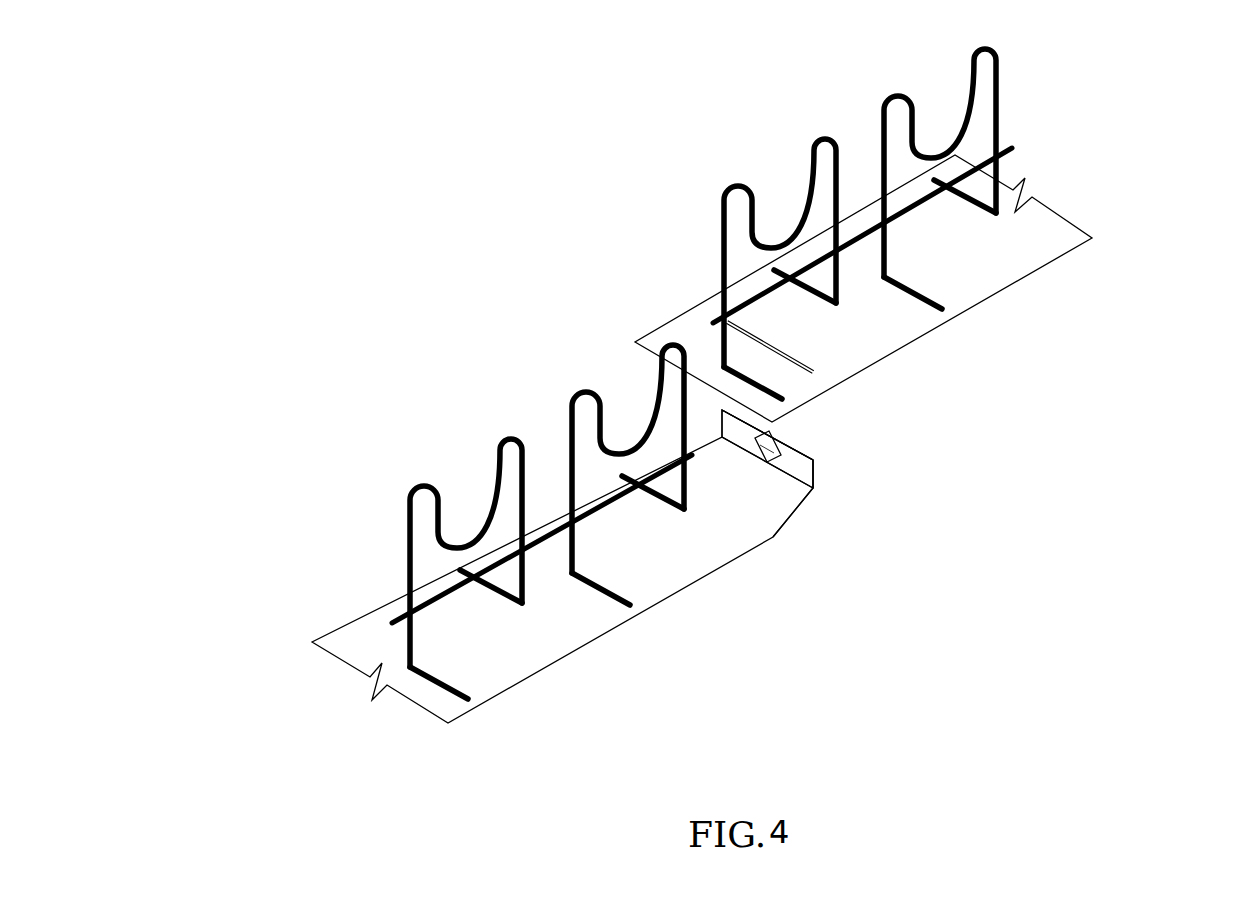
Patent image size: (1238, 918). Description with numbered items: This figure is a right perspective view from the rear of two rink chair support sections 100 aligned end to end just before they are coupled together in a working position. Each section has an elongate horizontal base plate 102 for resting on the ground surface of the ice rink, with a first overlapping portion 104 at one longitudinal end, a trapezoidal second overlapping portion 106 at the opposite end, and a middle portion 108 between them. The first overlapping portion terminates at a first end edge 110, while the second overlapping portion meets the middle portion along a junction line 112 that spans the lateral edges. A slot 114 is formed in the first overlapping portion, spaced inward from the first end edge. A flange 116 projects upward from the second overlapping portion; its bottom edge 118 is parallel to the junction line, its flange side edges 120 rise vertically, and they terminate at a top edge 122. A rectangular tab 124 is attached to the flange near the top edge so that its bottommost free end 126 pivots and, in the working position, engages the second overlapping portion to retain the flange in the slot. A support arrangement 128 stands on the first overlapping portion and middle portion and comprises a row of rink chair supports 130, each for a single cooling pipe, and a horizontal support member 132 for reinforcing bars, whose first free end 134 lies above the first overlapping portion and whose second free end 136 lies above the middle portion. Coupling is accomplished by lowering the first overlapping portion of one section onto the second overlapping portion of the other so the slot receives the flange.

The rink chair support section 100 is at (1087, 153).
The horizontal base plate 102 is at (508, 670).
The first overlapping portion 104 is at (945, 365).
The second overlapping portion 106 is at (797, 518).
The middle portion 108 is at (632, 647).
The first end edge 110 is at (712, 315).
The junction line 112 is at (742, 525).
The slot 114 is at (815, 355).
The flange 116 is at (848, 488).
The bottom edge 118 is at (799, 474).
The flange side edges 120 is at (817, 475).
The top edge 122 is at (798, 443).
The tab 124 is at (773, 440).
The bottommost free end 126 is at (762, 465).
The support arrangement 128 is at (315, 568).
The rink chair supports 130 is at (430, 473).
The horizontal support member 132 is at (430, 590).
The first free end 134 is at (640, 340).
The second free end 136 is at (693, 465).